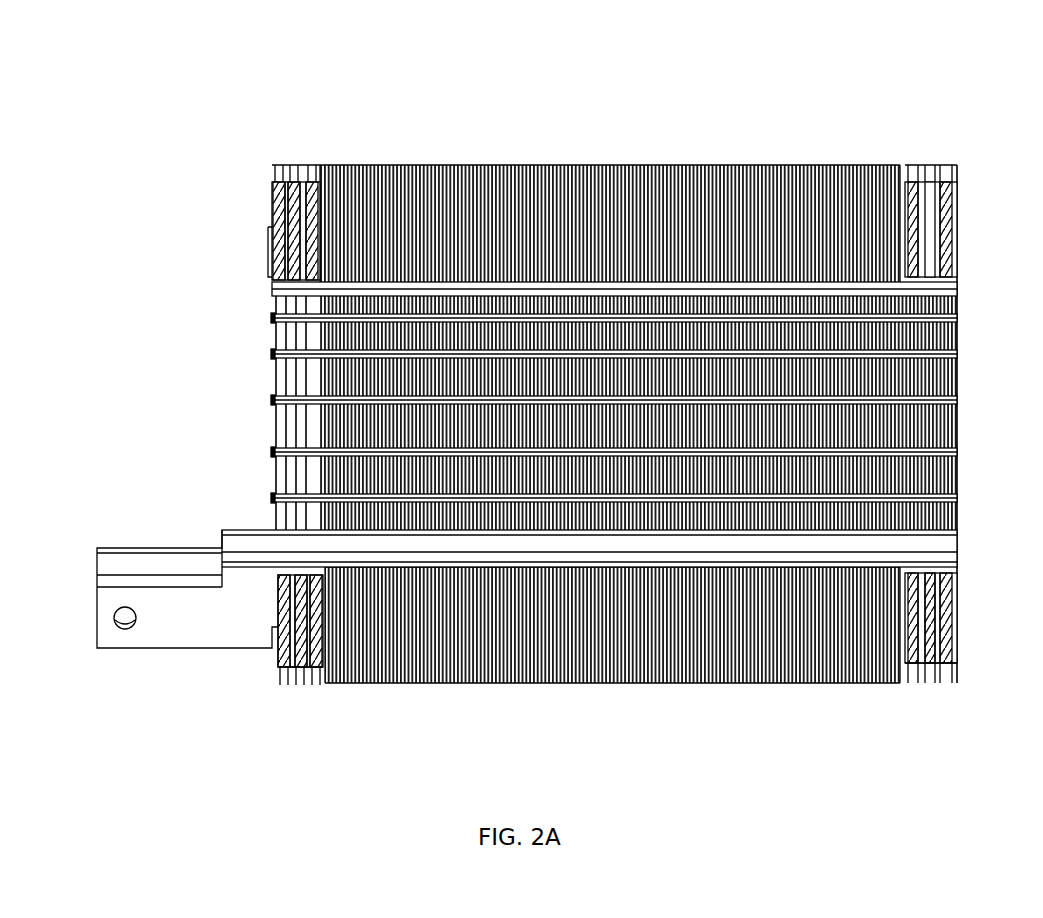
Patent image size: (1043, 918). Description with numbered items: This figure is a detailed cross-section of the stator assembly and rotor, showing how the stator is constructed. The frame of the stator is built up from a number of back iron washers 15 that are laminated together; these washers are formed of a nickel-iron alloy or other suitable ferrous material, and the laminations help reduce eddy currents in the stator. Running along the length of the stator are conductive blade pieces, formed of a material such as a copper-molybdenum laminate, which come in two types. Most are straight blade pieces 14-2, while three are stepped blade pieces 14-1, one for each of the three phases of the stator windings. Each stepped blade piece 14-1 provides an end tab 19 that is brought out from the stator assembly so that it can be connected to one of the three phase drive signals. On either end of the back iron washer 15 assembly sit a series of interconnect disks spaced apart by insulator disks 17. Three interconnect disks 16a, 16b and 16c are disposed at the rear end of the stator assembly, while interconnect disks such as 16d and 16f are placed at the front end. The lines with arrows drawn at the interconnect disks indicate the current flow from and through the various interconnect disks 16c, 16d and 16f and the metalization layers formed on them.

The stepped blade piece 14-1 is at (118, 648).
The straight blade piece 14-2 is at (272, 400).
The back iron washers 15 is at (480, 165).
The interconnect disk 16a is at (285, 688).
The interconnect disk 16b is at (298, 688).
The interconnect disk 16c is at (312, 165).
The interconnect disk 16d is at (908, 150).
The interconnect disk 16f is at (950, 150).
The insulator disks 17 is at (300, 165).
The end tab 19 is at (225, 525).